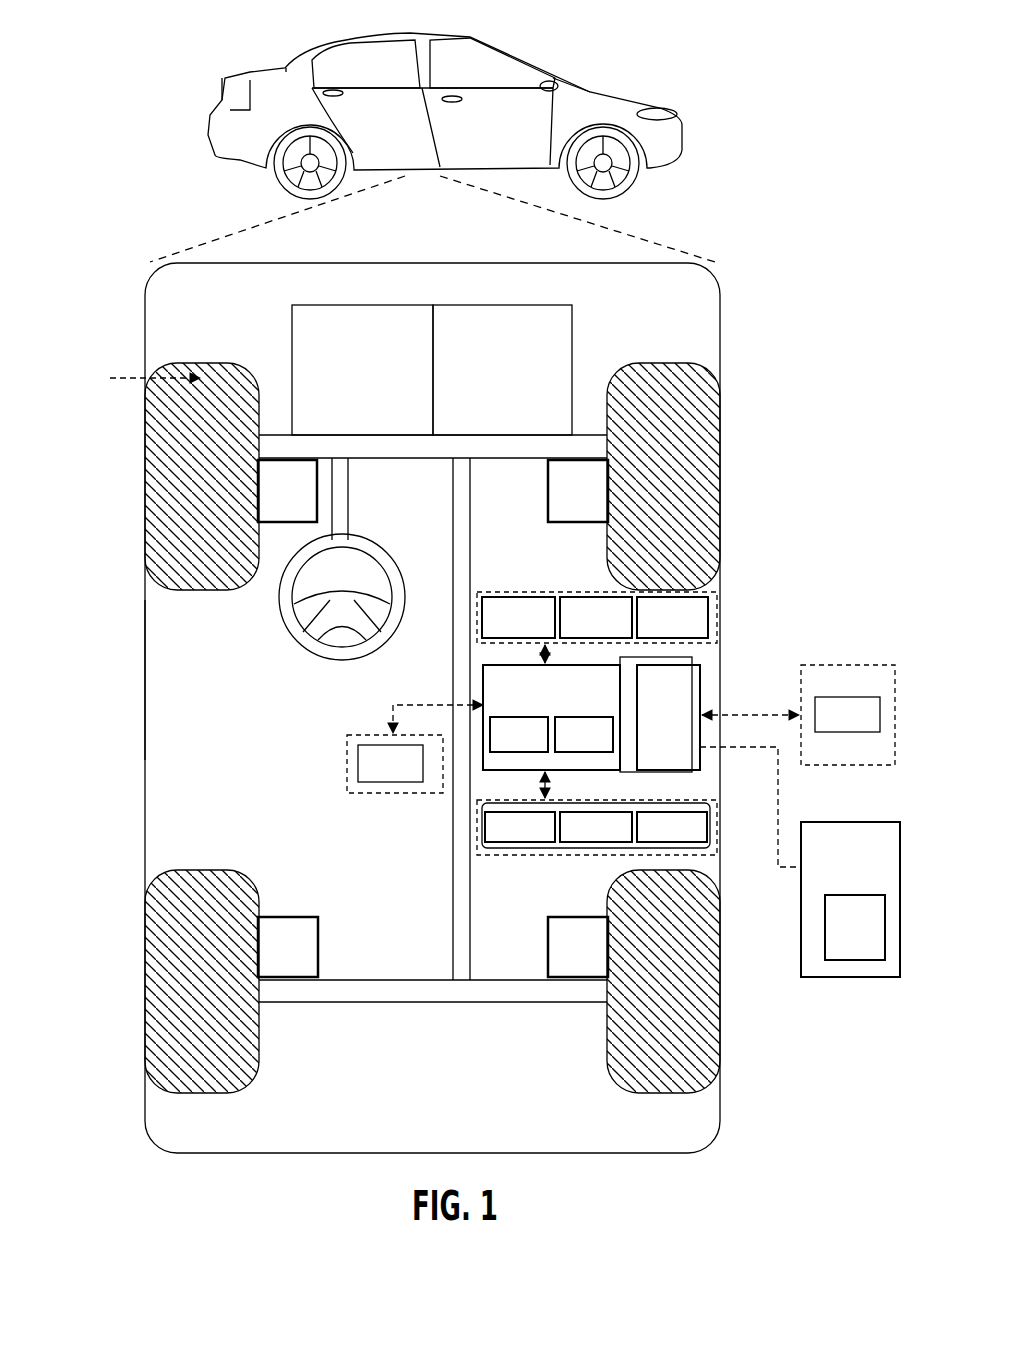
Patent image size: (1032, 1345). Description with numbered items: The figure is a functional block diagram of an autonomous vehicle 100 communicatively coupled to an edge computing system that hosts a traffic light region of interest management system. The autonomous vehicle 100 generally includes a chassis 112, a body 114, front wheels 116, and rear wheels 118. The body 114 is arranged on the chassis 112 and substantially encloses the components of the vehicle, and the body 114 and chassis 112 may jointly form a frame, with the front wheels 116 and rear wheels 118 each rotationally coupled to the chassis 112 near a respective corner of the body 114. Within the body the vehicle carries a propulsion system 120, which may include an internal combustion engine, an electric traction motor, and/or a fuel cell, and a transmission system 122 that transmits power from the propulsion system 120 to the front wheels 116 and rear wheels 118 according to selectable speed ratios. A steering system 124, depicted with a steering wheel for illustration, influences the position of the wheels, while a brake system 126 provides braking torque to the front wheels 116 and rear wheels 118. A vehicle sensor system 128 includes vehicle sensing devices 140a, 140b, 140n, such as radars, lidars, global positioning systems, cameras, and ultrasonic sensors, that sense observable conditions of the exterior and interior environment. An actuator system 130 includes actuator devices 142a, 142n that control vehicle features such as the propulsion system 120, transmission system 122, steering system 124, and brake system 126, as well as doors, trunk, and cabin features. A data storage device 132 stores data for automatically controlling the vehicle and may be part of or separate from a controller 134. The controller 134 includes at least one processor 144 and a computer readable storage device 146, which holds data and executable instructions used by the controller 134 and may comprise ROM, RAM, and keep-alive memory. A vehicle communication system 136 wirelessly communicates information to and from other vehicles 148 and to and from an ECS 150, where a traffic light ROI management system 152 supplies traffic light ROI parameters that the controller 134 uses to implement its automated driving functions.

The autonomous vehicle 100 is at (218, 100).
The chassis 112 is at (453, 840).
The body 114 is at (145, 675).
The front wheels 116 is at (200, 362).
The rear wheels 118 is at (200, 1093).
The propulsion system 120 is at (347, 378).
The transmission system 122 is at (485, 379).
The steering system 124 is at (352, 518).
The brake system 126 is at (271, 501).
The vehicle sensor system 128 is at (560, 592).
The actuator system 130 is at (563, 855).
The data storage device 132 is at (375, 772).
The controller 134 is at (569, 704).
The vehicle communication system 136 is at (652, 726).
The vehicle sensing device 140a is at (497, 627).
The vehicle sensing device 140b is at (575, 627).
The vehicle sensing device 140n is at (651, 627).
The actuator device 142a is at (499, 837).
The actuator device 142n is at (651, 837).
The processor 144 is at (503, 744).
The computer readable storage device 146 is at (568, 744).
The other vehicles 148 is at (832, 724).
The edge computing system 150 is at (834, 872).
The traffic light ROI management system 152 is at (839, 937).